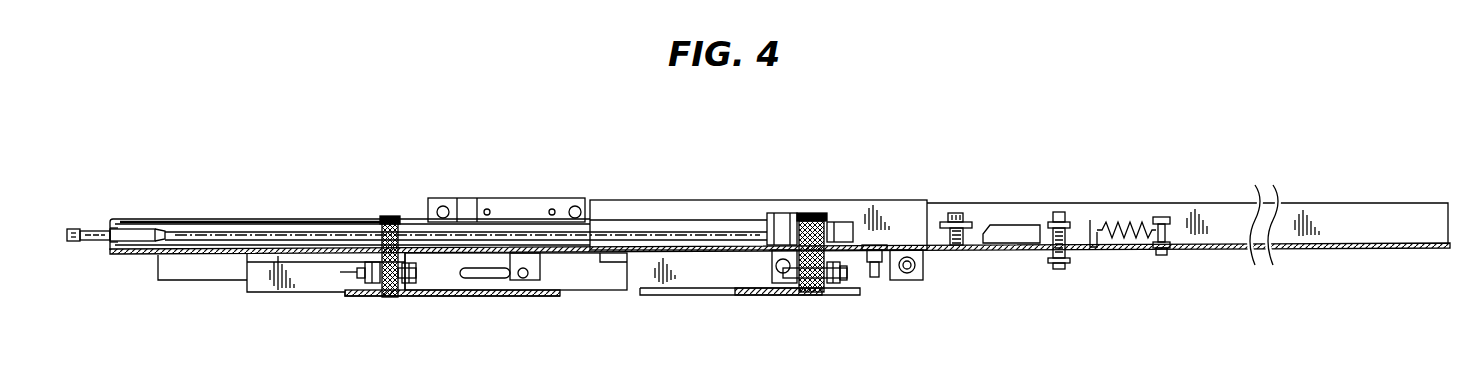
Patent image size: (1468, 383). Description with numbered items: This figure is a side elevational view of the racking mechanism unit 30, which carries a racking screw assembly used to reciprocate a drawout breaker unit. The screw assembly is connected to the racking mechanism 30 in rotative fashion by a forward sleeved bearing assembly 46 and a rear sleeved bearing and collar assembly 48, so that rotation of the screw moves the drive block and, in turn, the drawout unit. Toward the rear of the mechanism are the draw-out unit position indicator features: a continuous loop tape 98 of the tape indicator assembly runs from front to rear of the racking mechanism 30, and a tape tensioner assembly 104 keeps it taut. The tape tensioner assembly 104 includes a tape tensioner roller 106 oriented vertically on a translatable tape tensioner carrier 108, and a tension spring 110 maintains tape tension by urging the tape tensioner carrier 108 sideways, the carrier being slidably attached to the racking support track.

The racking mechanism unit 30 is at (1232, 160).
The forward sleeved bearing assembly 46 is at (388, 216).
The rear sleeved bearing and collar assembly 48 is at (815, 200).
The continuous loop tape 98 is at (1014, 238).
The tape tensioner assembly 104 is at (1070, 278).
The tape tensioner roller 106 is at (1058, 203).
The tape tensioner carrier 108 is at (1088, 246).
The tension spring 110 is at (1135, 218).